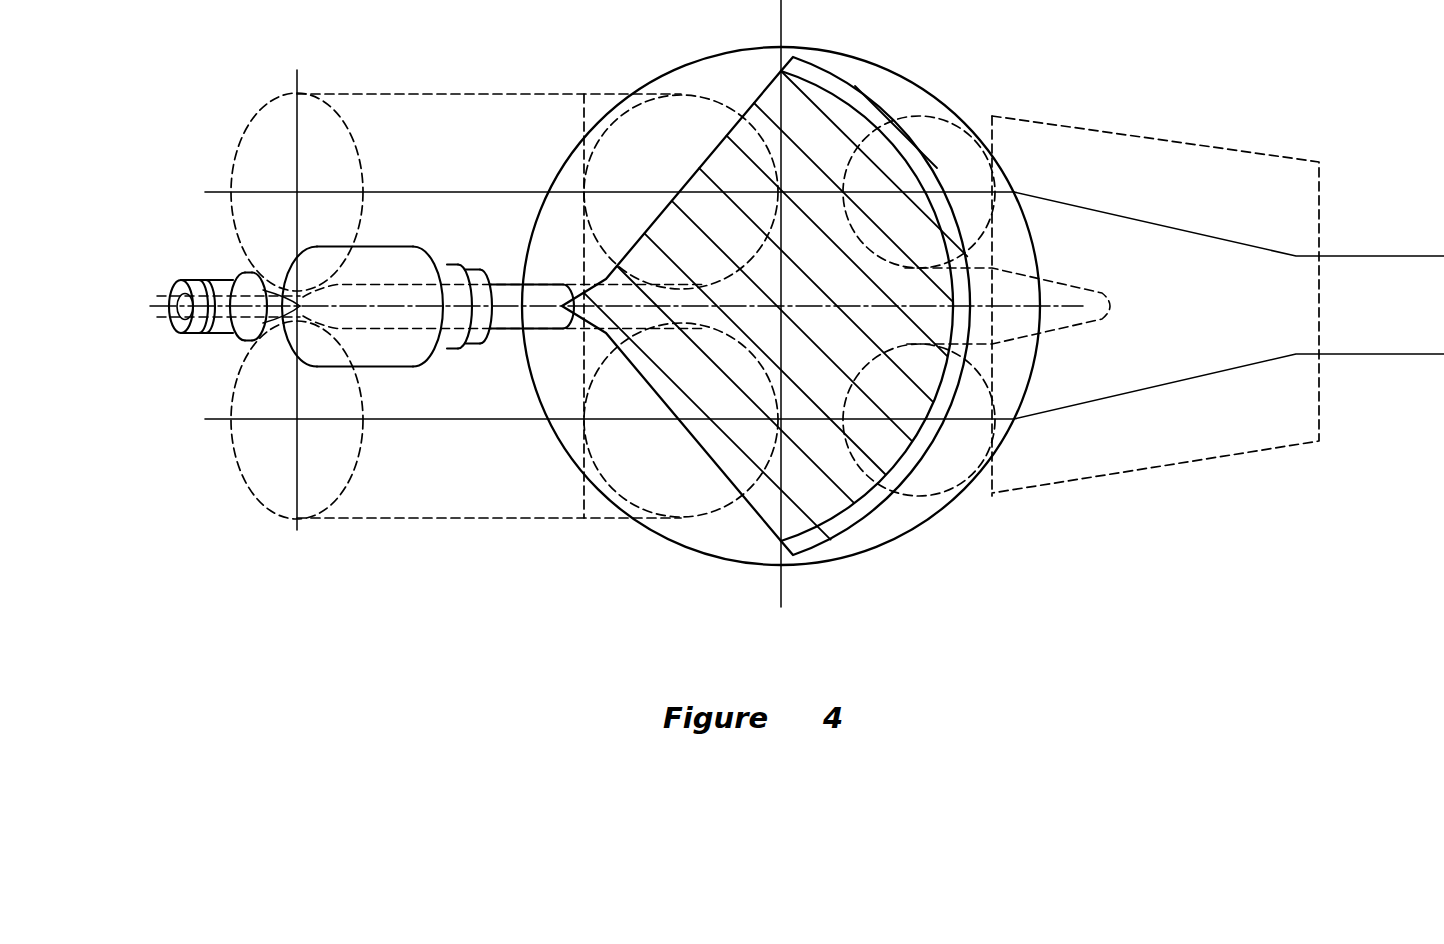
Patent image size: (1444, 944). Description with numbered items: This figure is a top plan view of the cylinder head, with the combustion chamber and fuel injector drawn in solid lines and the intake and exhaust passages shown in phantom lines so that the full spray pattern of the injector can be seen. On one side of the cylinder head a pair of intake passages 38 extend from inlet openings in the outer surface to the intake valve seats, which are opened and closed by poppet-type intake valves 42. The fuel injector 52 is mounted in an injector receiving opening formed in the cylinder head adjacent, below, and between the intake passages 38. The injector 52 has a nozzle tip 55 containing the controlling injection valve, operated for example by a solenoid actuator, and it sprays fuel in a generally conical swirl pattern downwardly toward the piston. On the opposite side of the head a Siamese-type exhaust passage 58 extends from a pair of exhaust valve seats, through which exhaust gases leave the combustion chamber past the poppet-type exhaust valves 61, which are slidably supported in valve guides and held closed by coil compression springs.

The intake passages 38 is at (395, 100).
The intake valves 42 is at (653, 112).
The fuel injector 52 is at (398, 257).
The nozzle tip 55 is at (547, 315).
The exhaust passage 58 is at (1181, 454).
The exhaust valves 61 is at (968, 152).